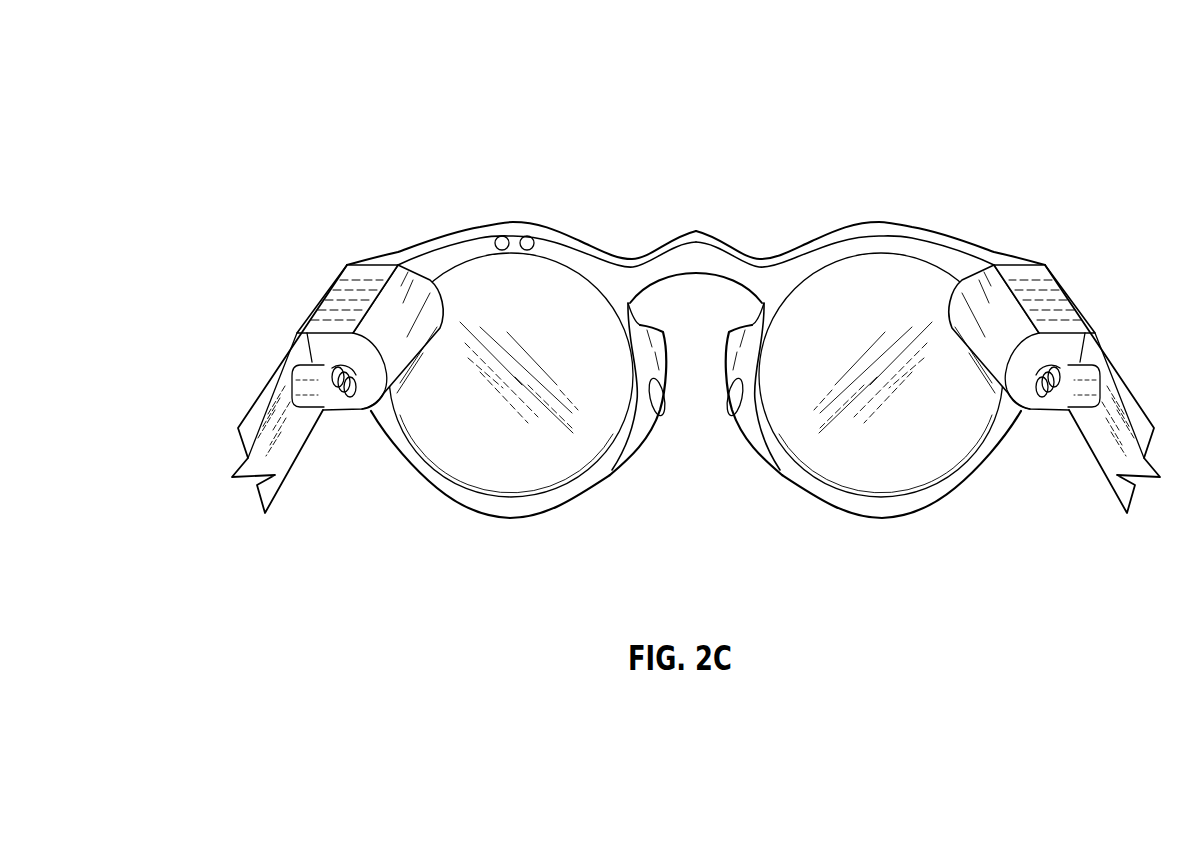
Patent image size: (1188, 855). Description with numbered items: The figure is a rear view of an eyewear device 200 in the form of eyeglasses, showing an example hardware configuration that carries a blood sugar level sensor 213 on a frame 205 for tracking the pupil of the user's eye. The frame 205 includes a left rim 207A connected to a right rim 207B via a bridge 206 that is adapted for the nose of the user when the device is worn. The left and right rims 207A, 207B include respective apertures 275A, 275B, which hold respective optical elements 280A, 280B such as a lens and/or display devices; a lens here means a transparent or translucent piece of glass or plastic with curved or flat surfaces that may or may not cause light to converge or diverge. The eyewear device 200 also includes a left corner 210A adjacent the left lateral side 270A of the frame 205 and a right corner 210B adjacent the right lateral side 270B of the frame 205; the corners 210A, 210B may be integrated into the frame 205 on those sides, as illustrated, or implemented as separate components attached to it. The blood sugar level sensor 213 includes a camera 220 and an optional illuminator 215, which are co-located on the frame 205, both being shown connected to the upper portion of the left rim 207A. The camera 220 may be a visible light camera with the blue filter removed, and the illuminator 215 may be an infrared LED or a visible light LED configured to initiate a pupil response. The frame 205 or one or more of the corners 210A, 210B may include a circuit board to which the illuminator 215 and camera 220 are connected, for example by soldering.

The eyewear device 200 is at (667, 326).
The frame 205 is at (838, 230).
The bridge 206 is at (697, 232).
The left rim 207A is at (588, 482).
The right rim 207B is at (983, 455).
The left corner 210A is at (333, 283).
The right corner 210B is at (1060, 283).
The blood sugar level sensor 213 is at (510, 185).
The illuminator 215 is at (500, 238).
The camera 220 is at (530, 237).
The left lateral side 270A is at (345, 262).
The right lateral side 270B is at (1035, 262).
The aperture 275A is at (440, 460).
The aperture 275B is at (840, 492).
The optical element 280A is at (482, 458).
The optical element 280B is at (887, 478).